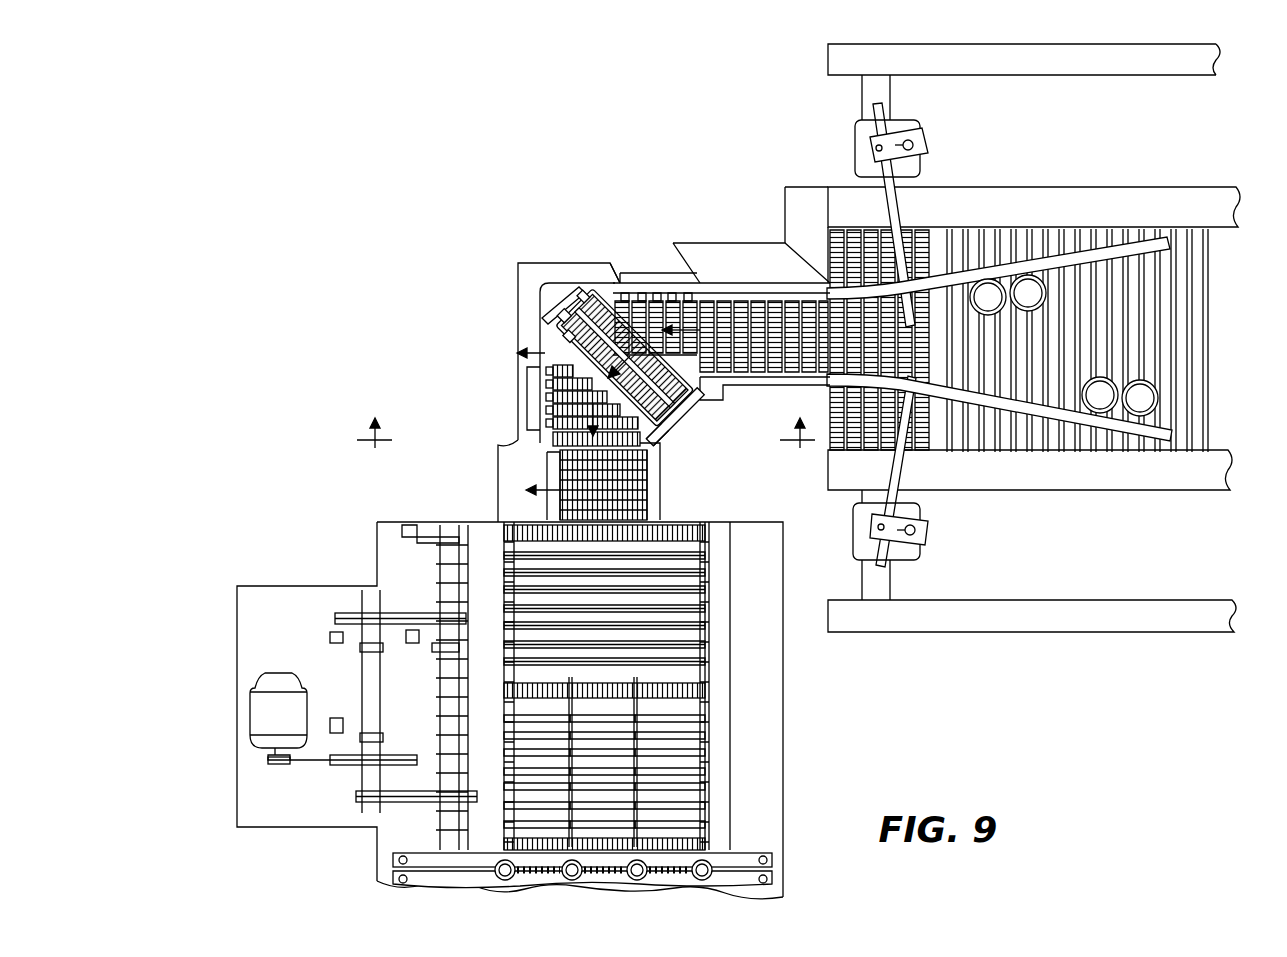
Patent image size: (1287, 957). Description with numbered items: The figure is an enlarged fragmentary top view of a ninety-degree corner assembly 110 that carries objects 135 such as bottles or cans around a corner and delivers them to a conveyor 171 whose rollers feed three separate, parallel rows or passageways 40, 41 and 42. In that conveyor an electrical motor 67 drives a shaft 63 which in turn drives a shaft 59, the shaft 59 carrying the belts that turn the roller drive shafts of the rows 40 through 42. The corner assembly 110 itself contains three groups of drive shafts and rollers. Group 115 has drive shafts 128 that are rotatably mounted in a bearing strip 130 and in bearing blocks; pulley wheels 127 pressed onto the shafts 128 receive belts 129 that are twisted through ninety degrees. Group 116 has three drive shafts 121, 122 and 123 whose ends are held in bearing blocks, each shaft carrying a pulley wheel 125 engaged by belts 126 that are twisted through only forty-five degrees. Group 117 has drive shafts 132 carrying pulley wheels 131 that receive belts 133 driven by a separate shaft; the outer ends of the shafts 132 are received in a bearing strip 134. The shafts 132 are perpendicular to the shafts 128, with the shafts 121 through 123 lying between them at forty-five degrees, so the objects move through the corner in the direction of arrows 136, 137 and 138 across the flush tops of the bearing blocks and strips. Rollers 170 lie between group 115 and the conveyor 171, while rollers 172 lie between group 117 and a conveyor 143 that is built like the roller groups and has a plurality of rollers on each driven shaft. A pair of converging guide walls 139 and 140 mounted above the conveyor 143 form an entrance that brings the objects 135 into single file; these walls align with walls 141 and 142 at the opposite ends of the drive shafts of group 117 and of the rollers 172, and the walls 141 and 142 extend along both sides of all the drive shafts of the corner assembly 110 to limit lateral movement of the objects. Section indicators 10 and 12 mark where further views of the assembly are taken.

The section line 10- 10 is at (582, 446).
The section line 12- 12 is at (520, 426).
The row 40 is at (656, 787).
The row 41 is at (599, 757).
The row 42 is at (546, 726).
The shaft 59 is at (447, 569).
The shaft 63 is at (372, 602).
The electrical motor 67 is at (268, 713).
The corner assembly 110 is at (567, 268).
The group of drive shafts and rollers 115 is at (537, 400).
The group of drive shafts and rollers 116 is at (560, 300).
The group of drive shafts and rollers 117 is at (660, 273).
The drive shaft 121 is at (664, 441).
The drive shaft 122 is at (660, 421).
The drive shaft 123 is at (688, 402).
The pulley wheel 125 is at (562, 314).
The belt 126 is at (600, 307).
The pulley wheel 127 is at (550, 366).
The drive shaft 128 is at (547, 382).
The belt 129 is at (550, 437).
The bearing strip 130 is at (547, 421).
The pulley wheel 131 is at (622, 292).
The drive shaft 132 is at (673, 268).
The belt 133 is at (641, 293).
The bearing strip 134 is at (700, 280).
The object 135 is at (1147, 395).
The arrow 136 is at (703, 317).
The arrow 137 is at (567, 338).
The arrow 138 is at (567, 452).
The converging guide wall 139 is at (1123, 425).
The converging guide wall 140 is at (1117, 258).
The wall 141 is at (787, 380).
The wall 142 is at (773, 300).
The conveyor 143 is at (1047, 430).
The rollers 170 is at (657, 490).
The conveyor 171 is at (724, 538).
The rollers 172 is at (815, 320).